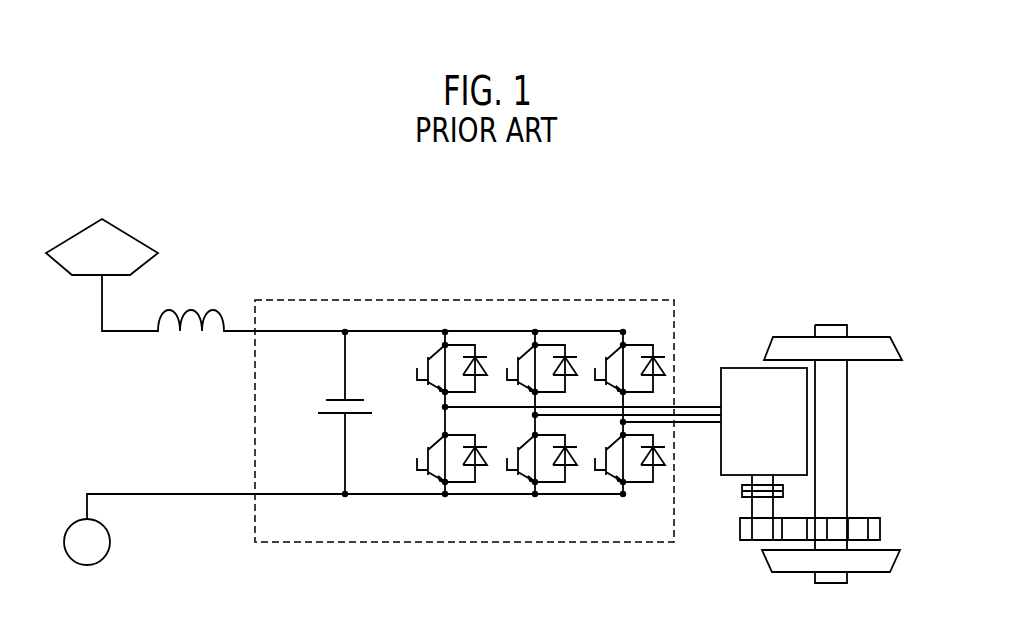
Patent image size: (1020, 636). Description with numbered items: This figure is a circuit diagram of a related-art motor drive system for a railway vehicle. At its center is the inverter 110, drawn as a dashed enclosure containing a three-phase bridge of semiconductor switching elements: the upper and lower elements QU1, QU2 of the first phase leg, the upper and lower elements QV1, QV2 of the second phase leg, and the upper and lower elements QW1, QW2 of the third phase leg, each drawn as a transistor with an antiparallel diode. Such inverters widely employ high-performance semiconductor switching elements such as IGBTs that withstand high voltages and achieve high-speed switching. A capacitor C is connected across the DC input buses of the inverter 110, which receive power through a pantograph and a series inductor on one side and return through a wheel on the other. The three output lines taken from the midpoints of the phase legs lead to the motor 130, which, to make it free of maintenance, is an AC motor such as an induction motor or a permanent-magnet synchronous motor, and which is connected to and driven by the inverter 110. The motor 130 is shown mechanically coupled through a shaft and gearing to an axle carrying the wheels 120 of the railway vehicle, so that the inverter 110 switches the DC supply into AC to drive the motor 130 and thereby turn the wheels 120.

The inverter 110 is at (464, 398).
The wheels 120 is at (866, 348).
The motor 130 is at (740, 371).
The capacitor C is at (345, 413).
The switching element QU1 is at (440, 367).
The switching element QU2 is at (439, 456).
The switching element QV1 is at (530, 367).
The switching element QV2 is at (529, 456).
The switching element QW1 is at (618, 367).
The switching element QW2 is at (617, 456).